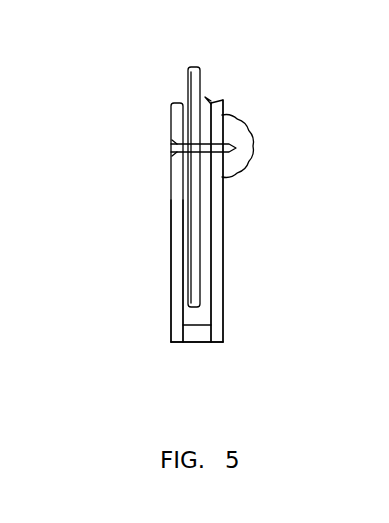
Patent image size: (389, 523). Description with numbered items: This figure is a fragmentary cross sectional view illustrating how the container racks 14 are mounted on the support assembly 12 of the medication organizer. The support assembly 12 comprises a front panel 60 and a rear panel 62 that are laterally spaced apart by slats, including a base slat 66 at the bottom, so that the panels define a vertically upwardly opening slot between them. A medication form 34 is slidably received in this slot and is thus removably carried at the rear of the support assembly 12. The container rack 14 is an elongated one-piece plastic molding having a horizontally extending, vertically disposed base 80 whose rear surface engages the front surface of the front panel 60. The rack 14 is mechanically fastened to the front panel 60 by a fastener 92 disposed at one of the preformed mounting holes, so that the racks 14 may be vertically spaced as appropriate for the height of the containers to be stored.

The support assembly 12 is at (130, 212).
The container rack 14 is at (263, 128).
The medication form 34 is at (187, 69).
The front panel 60 is at (224, 251).
The rear panel 62 is at (176, 287).
The base slat 66 is at (204, 335).
The base 80 is at (253, 158).
The fastener 92 is at (170, 143).